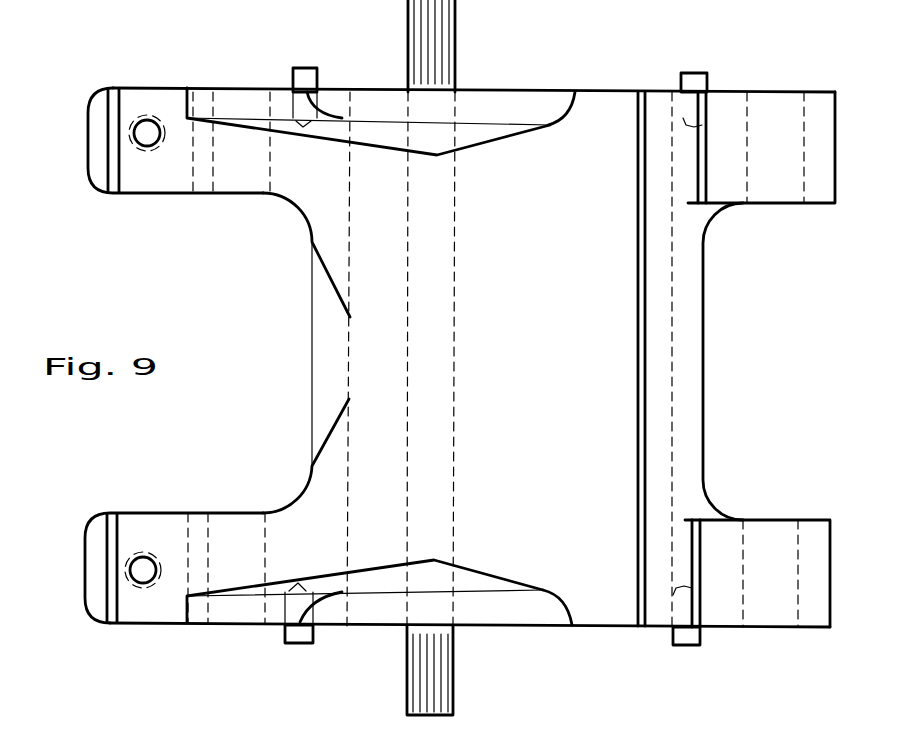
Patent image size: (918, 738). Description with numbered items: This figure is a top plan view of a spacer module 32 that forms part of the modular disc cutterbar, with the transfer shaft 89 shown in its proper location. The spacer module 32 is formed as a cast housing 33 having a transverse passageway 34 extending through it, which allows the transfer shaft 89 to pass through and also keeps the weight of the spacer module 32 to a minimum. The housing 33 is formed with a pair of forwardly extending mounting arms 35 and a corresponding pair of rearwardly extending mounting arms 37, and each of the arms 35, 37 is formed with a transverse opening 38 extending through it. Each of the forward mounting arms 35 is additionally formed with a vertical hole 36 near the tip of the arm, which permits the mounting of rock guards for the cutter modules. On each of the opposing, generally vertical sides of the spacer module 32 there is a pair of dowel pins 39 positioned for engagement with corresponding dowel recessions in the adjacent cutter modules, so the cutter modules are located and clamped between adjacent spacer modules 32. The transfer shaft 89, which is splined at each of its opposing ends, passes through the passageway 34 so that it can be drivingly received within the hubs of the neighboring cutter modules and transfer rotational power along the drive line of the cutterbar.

The spacer module 32 is at (705, 368).
The cast housing 33 is at (312, 467).
The transverse passageway 34 is at (527, 79).
The forwardly extending mounting arm 35 is at (92, 100).
The vertical hole 36 is at (135, 137).
The rearwardly extending mounting arm 37 is at (816, 203).
The transverse opening 38 is at (267, 76).
The dowel pin 39 is at (305, 67).
The transfer shaft 89 is at (457, 15).